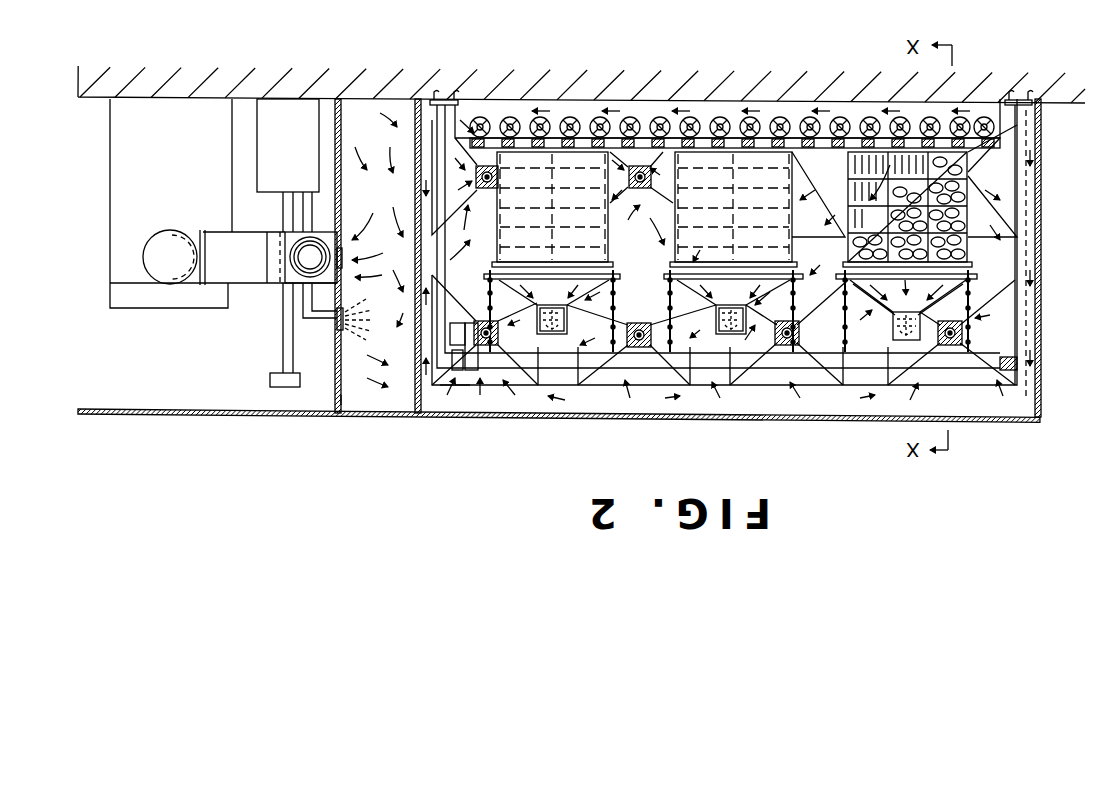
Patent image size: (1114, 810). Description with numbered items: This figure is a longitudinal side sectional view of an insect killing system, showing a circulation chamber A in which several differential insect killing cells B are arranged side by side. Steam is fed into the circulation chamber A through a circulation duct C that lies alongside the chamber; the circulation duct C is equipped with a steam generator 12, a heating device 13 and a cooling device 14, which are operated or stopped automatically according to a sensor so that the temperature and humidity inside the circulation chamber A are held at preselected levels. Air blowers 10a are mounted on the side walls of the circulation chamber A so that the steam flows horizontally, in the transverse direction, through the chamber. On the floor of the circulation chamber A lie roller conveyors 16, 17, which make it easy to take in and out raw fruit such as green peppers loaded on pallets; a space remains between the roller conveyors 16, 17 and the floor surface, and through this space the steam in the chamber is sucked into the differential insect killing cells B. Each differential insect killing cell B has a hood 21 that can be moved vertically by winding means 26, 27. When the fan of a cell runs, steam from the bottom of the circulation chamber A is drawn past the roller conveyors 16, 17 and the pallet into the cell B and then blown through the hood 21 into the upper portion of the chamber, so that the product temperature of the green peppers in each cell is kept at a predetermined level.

The air blower 10a is at (486, 166).
The steam generator 12 is at (306, 128).
The heating device 13 is at (132, 300).
The cooling device 14 is at (321, 289).
The roller conveyor 16 is at (962, 140).
The roller conveyor 17 is at (1000, 132).
The hood 21 is at (530, 297).
The winding means 26 is at (972, 331).
The winding means 27 is at (1037, 397).
The circulation chamber A is at (457, 420).
The differential insect killing cell B is at (968, 218).
The circulation duct C is at (363, 406).